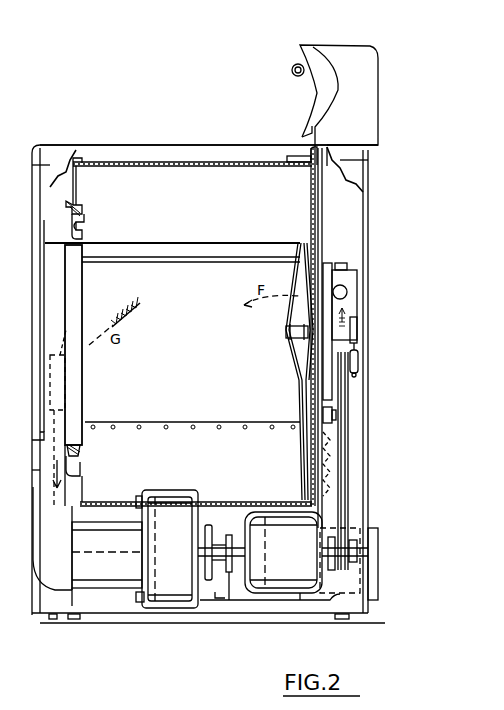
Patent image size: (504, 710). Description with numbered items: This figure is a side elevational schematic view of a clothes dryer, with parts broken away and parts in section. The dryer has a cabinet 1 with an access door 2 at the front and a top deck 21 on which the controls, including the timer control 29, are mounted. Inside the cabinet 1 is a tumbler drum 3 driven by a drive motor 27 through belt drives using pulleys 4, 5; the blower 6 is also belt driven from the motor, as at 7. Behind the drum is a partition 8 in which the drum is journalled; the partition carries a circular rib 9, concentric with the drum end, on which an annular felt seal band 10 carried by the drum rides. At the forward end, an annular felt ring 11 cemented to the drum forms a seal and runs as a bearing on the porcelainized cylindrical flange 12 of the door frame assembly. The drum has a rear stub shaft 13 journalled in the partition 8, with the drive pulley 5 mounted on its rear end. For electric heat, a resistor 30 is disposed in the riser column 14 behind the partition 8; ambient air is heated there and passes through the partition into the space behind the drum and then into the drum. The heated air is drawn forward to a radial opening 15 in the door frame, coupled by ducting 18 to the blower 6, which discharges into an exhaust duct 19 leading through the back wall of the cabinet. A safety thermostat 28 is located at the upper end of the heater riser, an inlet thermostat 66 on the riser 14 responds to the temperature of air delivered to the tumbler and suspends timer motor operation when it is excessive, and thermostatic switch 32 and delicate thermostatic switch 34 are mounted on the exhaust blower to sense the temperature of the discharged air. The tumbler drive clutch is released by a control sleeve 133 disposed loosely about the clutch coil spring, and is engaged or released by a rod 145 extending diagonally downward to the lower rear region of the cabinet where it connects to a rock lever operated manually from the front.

The cabinet 1 is at (44, 172).
The access door 2 is at (31, 272).
The tumbler drum 3 is at (205, 162).
The pulley 4 is at (348, 477).
The drive pulley 5 is at (330, 387).
The blower 6 is at (163, 608).
The belt drive 7 is at (209, 580).
The partition 8 is at (318, 210).
The circular rib 9 is at (362, 160).
The annular felt seal band 10 is at (312, 160).
The annular felt ring 11 is at (82, 214).
The cylindrical flange 12 is at (85, 228).
The rear stub shaft 13 is at (286, 333).
The riser column 14 is at (357, 302).
The radial opening 15 is at (42, 380).
The ducting 18 is at (56, 470).
The exhaust duct 19 is at (380, 585).
The top deck 21 is at (129, 146).
The drive motor 27 is at (277, 593).
The safety thermostat 28 is at (348, 263).
The timer control 29 is at (292, 69).
The resistor 30 is at (332, 460).
The thermostatic switch 32 is at (137, 496).
The delicate thermostatic switch 34 is at (137, 602).
The inlet thermostat 66 is at (347, 287).
The control sleeve 133 is at (358, 322).
The rod 145 is at (360, 362).